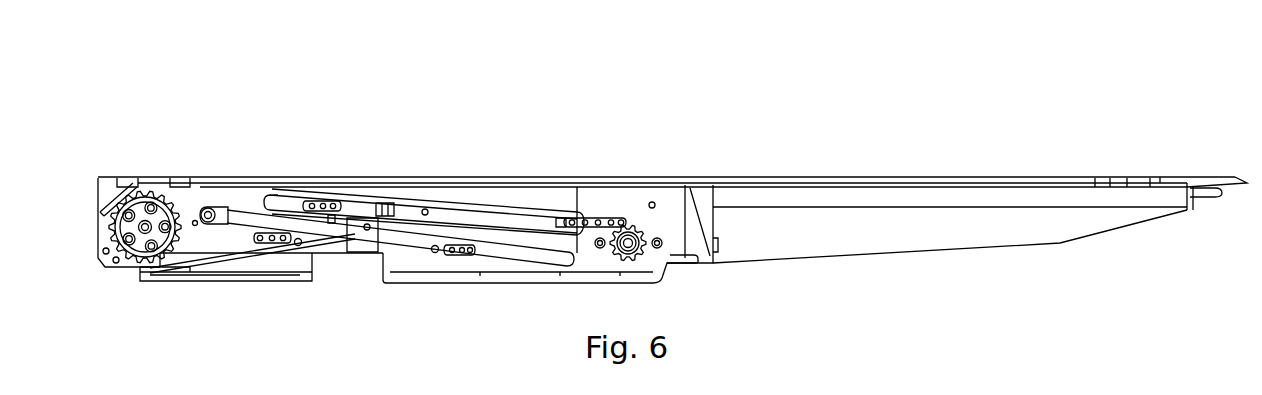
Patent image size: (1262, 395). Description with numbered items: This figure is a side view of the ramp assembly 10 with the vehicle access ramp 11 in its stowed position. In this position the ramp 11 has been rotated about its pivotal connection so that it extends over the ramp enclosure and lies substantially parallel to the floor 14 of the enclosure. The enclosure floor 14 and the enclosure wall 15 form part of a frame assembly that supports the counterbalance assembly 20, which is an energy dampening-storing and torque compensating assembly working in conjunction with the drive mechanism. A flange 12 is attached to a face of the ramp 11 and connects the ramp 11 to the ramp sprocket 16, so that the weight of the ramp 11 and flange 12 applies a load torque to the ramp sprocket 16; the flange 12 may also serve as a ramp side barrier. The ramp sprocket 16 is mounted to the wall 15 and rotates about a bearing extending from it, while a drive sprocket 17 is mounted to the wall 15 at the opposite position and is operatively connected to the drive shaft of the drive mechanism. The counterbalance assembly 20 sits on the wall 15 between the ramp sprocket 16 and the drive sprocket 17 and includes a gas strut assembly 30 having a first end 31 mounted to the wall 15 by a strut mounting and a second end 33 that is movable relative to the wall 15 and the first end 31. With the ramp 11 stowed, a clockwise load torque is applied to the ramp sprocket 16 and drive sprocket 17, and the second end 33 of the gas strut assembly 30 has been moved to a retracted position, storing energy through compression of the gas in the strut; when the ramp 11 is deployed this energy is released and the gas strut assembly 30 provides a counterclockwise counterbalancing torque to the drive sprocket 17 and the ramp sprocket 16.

The ramp assembly 10 is at (380, 116).
The vehicle access ramp 11 is at (917, 177).
The flange 12 is at (207, 252).
The floor 14 is at (447, 284).
The enclosure wall 15 is at (630, 198).
The ramp sprocket 16 is at (123, 272).
The drive sprocket 17 is at (647, 260).
The counterbalance assembly 20 is at (480, 203).
The gas strut assembly 30 is at (240, 228).
The first end 31 is at (210, 206).
The second end 33 is at (360, 246).